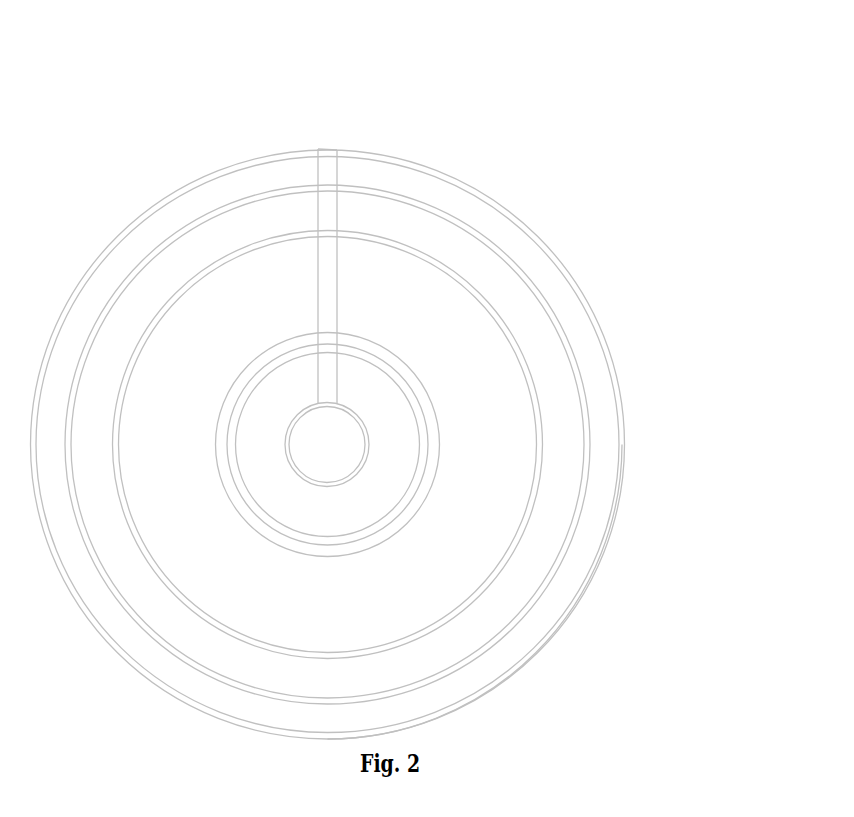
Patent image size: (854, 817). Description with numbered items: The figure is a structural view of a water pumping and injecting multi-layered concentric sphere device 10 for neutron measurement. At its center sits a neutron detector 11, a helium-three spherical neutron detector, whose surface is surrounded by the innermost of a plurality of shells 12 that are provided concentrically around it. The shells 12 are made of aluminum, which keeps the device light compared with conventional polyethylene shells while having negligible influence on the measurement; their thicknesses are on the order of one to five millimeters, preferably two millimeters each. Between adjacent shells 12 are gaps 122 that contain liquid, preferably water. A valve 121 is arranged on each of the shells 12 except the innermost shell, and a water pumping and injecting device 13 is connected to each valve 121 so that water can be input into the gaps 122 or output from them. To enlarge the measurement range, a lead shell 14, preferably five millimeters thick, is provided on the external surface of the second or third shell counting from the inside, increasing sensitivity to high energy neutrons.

The water pumping and injecting multi-layered concentric sphere device 10 is at (429, 90).
The neutron detector 11 is at (346, 429).
The shells 12 is at (498, 202).
The water pumping and injecting device 13 is at (338, 216).
The lead shell 14 is at (440, 435).
The valve 121 is at (333, 150).
The gaps 122 is at (598, 445).